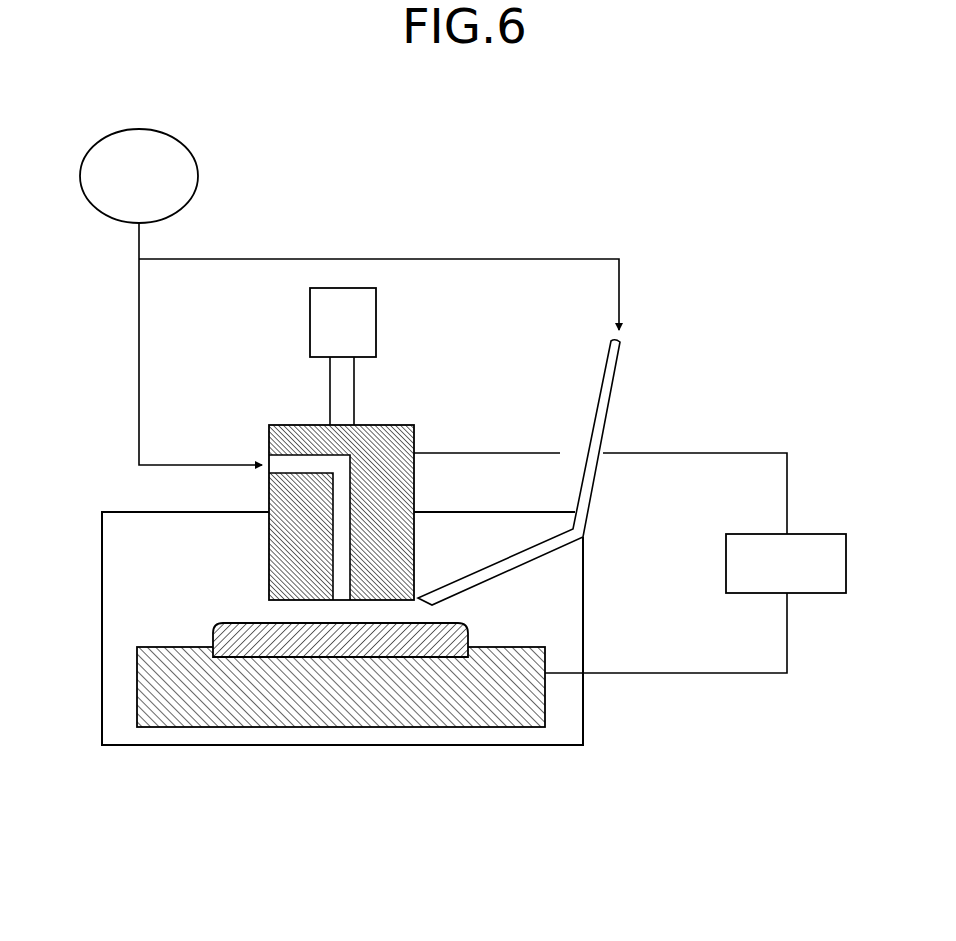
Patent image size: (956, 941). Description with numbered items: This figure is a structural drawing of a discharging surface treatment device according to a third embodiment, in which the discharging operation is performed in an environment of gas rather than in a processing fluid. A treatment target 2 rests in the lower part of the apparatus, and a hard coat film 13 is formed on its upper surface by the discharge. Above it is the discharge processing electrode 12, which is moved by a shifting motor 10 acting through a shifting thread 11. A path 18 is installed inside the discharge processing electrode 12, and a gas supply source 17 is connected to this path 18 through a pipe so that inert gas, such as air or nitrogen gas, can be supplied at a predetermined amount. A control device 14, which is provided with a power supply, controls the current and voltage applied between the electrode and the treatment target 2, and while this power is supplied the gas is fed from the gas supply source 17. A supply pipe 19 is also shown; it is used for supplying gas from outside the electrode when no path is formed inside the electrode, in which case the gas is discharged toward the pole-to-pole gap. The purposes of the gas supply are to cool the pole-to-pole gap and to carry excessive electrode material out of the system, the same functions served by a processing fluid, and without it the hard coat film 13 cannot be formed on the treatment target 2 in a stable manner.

The gas supply source 17 is at (200, 158).
The shifting motor 10 is at (367, 317).
The shifting thread 11 is at (354, 385).
The discharge processing electrode 12 is at (280, 442).
The path 18 is at (347, 471).
The supply pipe 19 is at (618, 380).
The control device 14 is at (824, 533).
The treatment target 2 is at (432, 718).
The hard coat film 13 is at (303, 650).